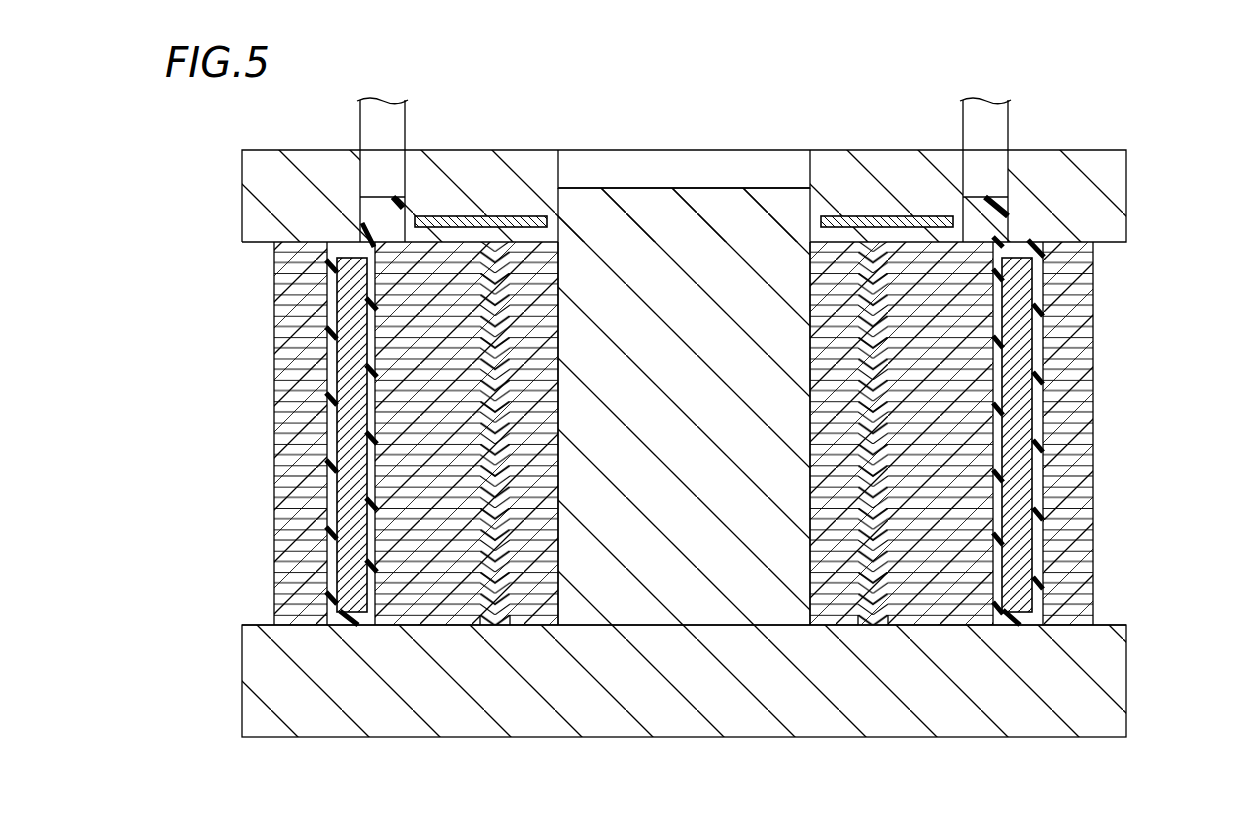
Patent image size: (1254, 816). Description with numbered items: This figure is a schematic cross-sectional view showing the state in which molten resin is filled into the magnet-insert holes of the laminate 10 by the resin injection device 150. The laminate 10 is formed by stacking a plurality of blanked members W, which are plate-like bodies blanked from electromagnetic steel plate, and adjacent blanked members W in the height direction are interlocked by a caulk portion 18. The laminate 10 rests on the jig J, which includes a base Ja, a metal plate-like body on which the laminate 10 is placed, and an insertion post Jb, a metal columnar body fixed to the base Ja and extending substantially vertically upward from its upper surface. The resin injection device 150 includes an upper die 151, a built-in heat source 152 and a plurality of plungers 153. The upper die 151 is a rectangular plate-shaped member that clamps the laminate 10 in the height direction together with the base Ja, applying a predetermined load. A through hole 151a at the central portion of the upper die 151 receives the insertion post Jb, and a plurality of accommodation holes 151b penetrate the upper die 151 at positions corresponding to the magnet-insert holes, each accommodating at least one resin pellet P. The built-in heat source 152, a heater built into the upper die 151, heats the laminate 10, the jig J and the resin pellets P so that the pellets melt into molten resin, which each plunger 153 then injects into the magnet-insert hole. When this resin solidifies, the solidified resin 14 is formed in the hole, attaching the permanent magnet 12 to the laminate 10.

The resin injection device 150 is at (742, 158).
The upper die 151 is at (689, 160).
The through hole 151a is at (560, 170).
The accommodation hole 151b is at (373, 197).
The built-in heat source 152 is at (508, 215).
The plunger 153 is at (405, 117).
The resin pellet P is at (403, 207).
The laminate 10 is at (703, 502).
The blanked member W is at (282, 535).
The permanent magnet 12 is at (337, 305).
The solidified resin 14 is at (340, 618).
The caulk portion 18 is at (493, 629).
The jig J is at (714, 441).
The base Ja is at (1103, 715).
The insertion post Jb is at (702, 197).